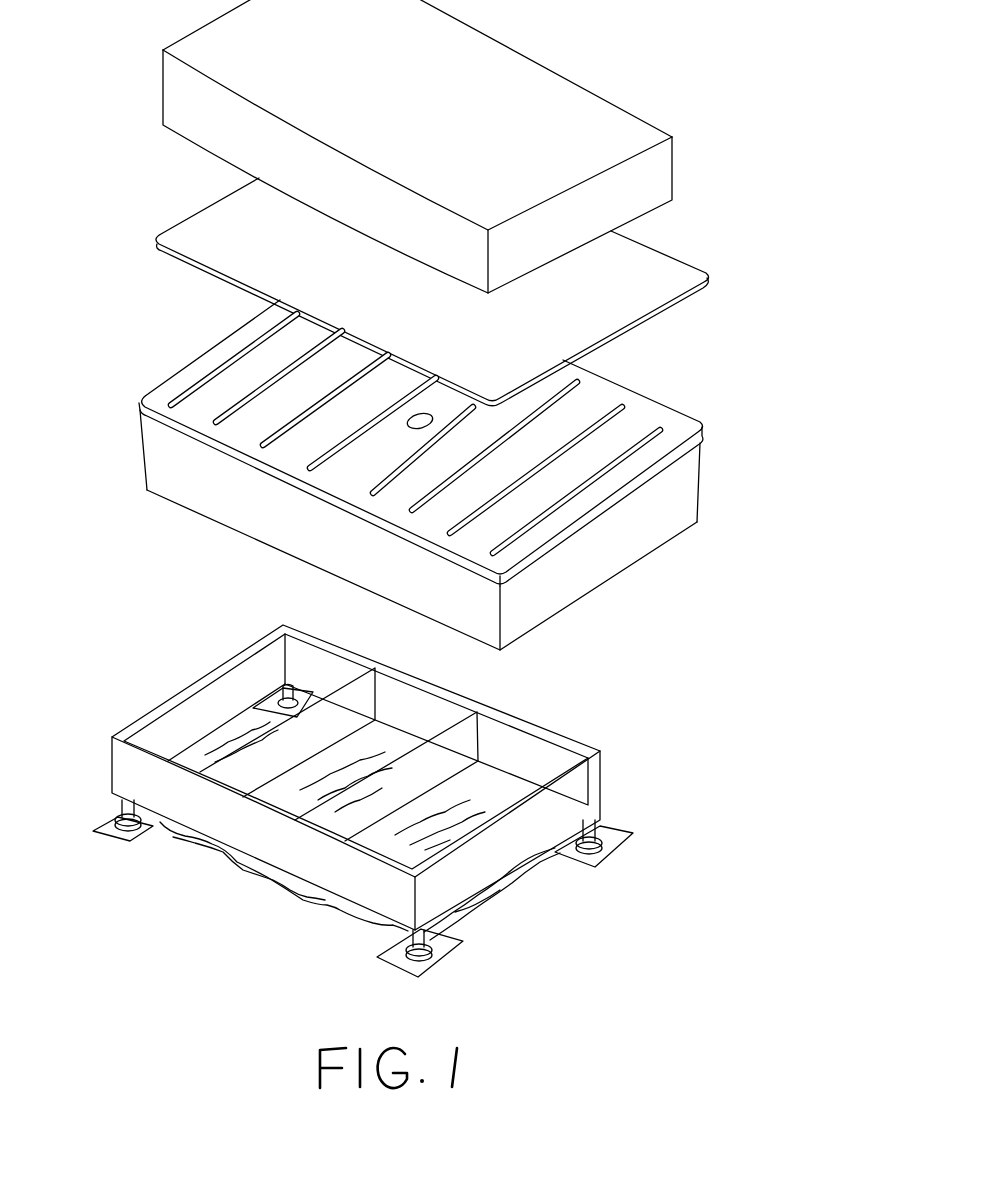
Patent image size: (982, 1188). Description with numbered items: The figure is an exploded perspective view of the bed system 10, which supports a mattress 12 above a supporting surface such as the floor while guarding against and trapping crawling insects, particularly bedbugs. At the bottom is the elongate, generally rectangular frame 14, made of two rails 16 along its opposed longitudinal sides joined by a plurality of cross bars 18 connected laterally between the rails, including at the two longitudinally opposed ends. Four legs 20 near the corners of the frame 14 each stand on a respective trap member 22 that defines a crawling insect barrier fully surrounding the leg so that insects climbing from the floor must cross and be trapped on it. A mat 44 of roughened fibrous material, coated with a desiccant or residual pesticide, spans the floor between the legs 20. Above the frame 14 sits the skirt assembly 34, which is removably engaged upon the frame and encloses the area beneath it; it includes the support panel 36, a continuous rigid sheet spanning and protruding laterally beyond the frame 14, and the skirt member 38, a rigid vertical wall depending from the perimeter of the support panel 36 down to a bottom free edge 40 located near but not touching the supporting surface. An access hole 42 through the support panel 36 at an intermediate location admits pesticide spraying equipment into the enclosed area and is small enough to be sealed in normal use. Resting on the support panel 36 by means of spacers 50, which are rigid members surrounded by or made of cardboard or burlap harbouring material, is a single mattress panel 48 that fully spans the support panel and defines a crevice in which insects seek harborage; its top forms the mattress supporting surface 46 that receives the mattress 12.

The bed system 10 is at (838, 288).
The mattress 12 is at (652, 121).
The frame 14 is at (736, 775).
The rails 16 is at (521, 716).
The cross bars 18 is at (318, 736).
The legs 20 is at (123, 812).
The trap members 22 is at (100, 847).
The skirt assembly 34 is at (755, 485).
The support panel 36 is at (681, 415).
The skirt member 38 is at (660, 530).
The bottom free edge 40 is at (614, 578).
The access hole 42 is at (409, 430).
The mat of fibrous material 44 is at (307, 897).
The mattress supporting surface 46 is at (647, 280).
The mattress panel 48 is at (620, 313).
The spacers 50 is at (232, 362).